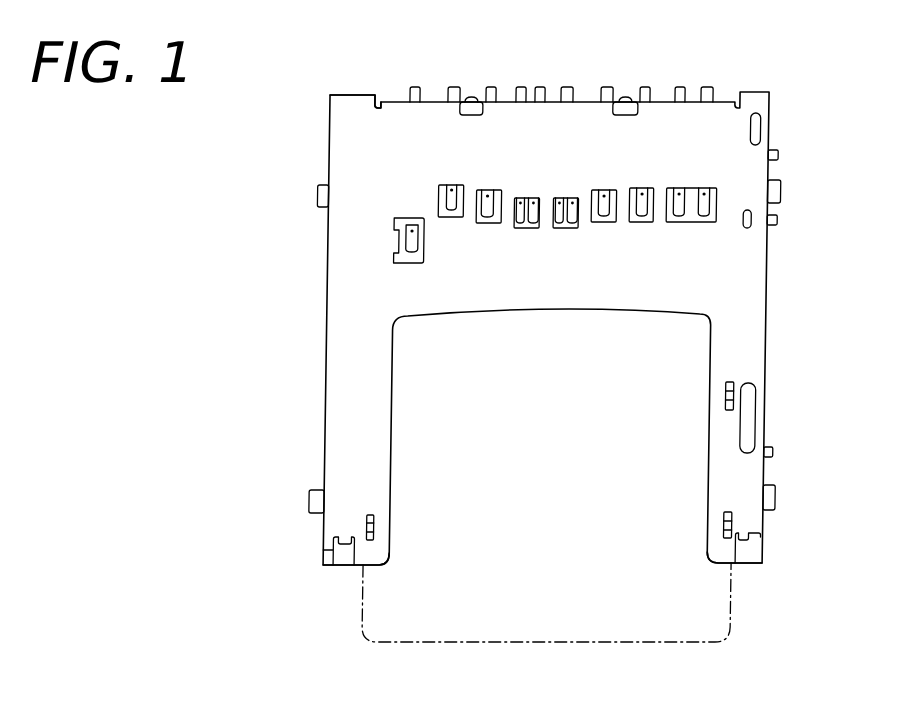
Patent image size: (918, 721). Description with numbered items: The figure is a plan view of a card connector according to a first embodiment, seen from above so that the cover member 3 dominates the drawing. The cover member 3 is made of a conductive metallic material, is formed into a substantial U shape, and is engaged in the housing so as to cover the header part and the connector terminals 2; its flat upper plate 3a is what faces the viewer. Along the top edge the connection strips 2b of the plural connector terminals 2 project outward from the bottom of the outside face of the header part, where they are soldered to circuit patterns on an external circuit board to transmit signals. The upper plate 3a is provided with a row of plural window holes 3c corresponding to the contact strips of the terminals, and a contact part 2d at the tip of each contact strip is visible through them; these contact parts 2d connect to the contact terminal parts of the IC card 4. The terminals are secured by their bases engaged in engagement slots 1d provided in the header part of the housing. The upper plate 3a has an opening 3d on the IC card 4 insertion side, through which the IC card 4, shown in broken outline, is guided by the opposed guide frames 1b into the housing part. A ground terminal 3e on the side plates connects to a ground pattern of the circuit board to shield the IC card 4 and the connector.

The guide frame 1b is at (757, 548).
The engagement slot 1d is at (346, 552).
The connector terminal 2 is at (402, 85).
The connection strip 2b is at (616, 96).
The contact part 2d is at (592, 223).
The cover member 3 is at (327, 345).
The upper plate 3a is at (353, 157).
The window hole 3c is at (393, 240).
The opening 3d is at (511, 522).
The ground terminal 3e is at (779, 190).
The IC card 4 is at (683, 614).